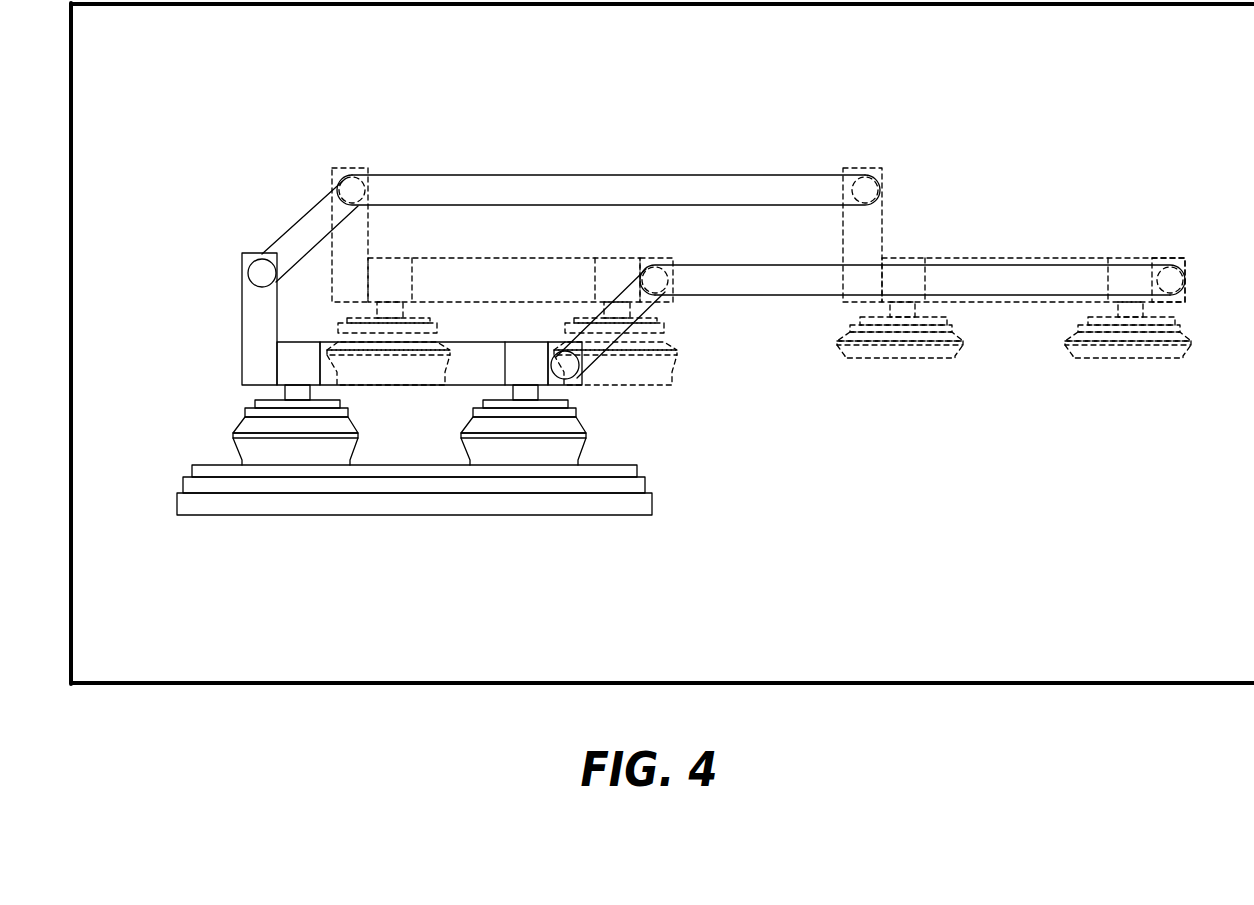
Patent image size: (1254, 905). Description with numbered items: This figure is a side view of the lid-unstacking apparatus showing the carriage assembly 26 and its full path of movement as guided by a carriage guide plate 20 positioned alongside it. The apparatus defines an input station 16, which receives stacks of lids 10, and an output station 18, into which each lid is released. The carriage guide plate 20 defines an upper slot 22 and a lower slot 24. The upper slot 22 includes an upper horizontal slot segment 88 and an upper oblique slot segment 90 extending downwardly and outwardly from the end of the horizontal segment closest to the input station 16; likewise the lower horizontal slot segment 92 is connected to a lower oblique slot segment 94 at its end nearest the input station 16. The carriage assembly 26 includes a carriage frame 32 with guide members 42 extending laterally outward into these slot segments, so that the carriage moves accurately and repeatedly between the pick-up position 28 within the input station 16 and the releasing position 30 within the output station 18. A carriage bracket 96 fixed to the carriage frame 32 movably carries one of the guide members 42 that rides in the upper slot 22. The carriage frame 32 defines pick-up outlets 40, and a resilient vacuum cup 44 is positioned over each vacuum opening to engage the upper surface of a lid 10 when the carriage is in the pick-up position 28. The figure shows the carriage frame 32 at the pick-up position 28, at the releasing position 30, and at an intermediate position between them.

The lid 10 is at (287, 505).
The input station 16 is at (360, 600).
The output station 18 is at (1097, 415).
The carriage guide plate 20 is at (813, 59).
The upper slot 22 is at (608, 146).
The lower slot 24 is at (912, 296).
The carriage assembly 26 is at (470, 383).
The pick-up position 28 is at (337, 351).
The releasing position 30 is at (1095, 257).
The carriage frame 32 is at (300, 348).
The pick-up outlet 40 is at (270, 395).
The guide member 42 is at (352, 195).
The vacuum cup 44 is at (257, 447).
The upper horizontal slot segment 88 is at (622, 183).
The upper oblique slot segment 90 is at (298, 225).
The lower horizontal slot segment 92 is at (1020, 290).
The lower oblique slot segment 94 is at (600, 340).
The carriage bracket 96 is at (242, 320).